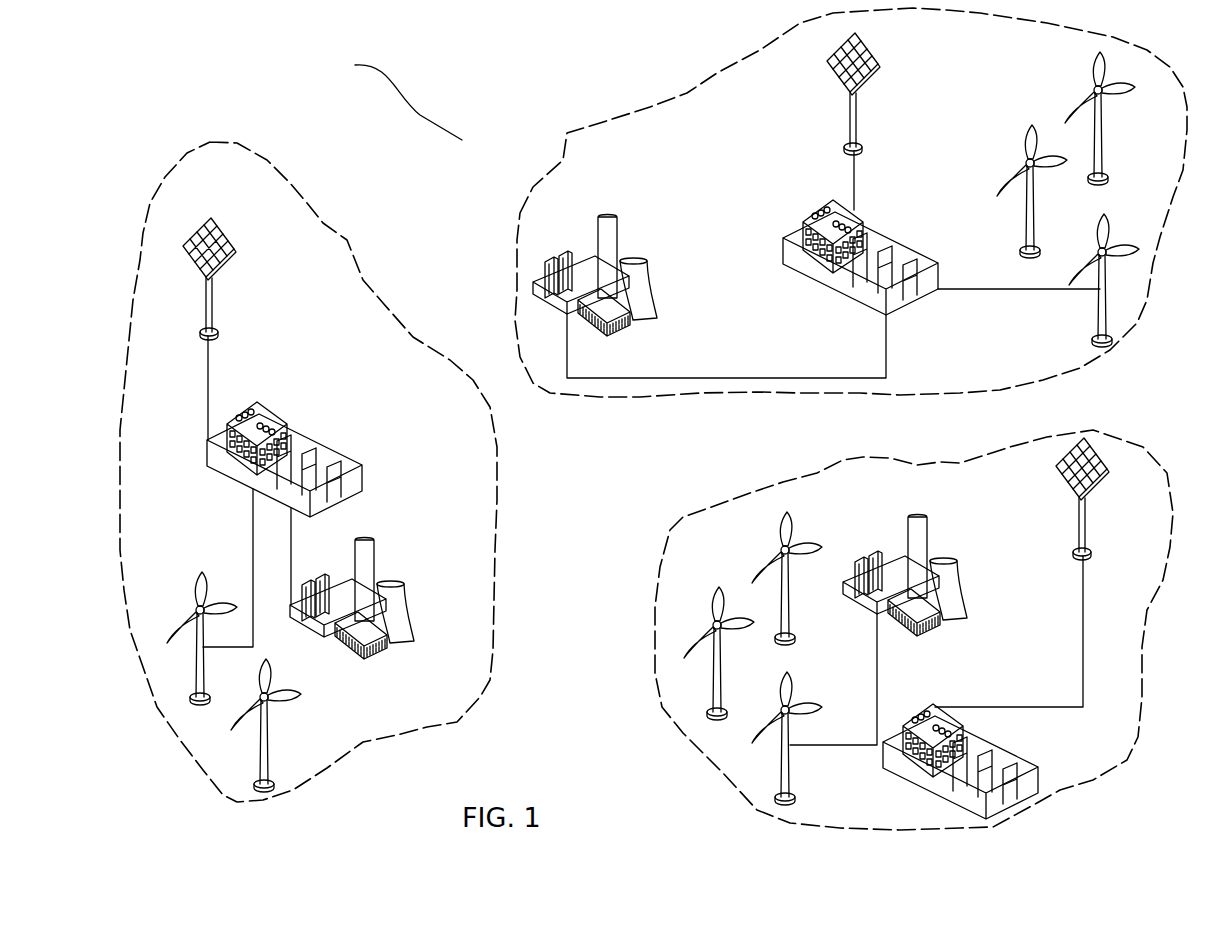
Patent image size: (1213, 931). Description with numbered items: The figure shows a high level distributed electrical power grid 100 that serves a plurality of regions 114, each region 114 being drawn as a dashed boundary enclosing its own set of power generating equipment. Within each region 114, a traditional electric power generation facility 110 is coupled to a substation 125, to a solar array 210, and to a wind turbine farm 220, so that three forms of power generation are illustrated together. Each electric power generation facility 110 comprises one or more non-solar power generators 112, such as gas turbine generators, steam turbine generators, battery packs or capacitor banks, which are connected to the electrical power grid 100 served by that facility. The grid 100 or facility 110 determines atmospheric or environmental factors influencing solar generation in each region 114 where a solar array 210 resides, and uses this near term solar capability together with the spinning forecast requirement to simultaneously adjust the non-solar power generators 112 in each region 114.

The electrical power grid 100 is at (462, 140).
The region 114 is at (306, 192).
The solar array 210 is at (213, 303).
The substation 125 is at (342, 452).
The electric power generation facility 110 is at (410, 620).
The non-solar power generator 112 is at (335, 592).
The wind turbine farm 220 is at (198, 580).